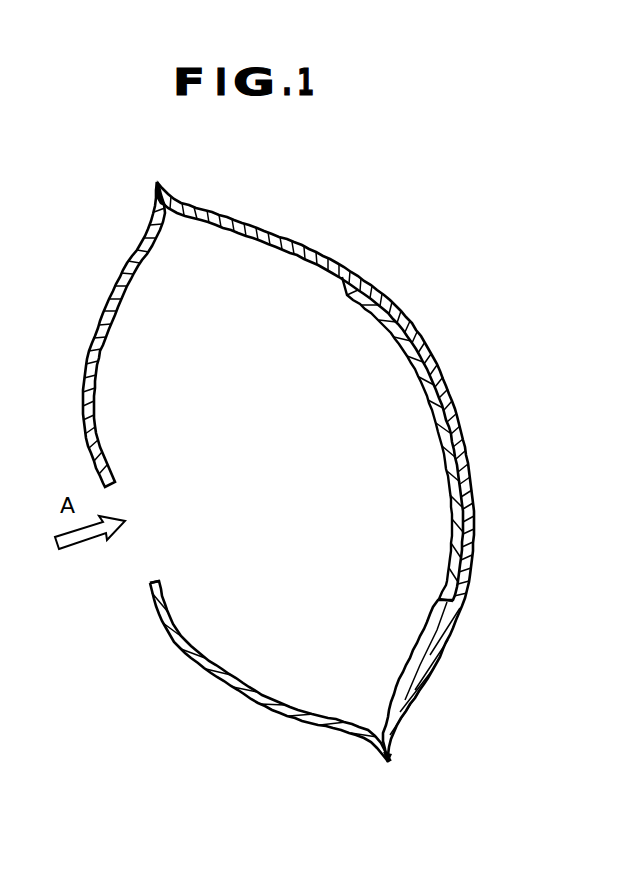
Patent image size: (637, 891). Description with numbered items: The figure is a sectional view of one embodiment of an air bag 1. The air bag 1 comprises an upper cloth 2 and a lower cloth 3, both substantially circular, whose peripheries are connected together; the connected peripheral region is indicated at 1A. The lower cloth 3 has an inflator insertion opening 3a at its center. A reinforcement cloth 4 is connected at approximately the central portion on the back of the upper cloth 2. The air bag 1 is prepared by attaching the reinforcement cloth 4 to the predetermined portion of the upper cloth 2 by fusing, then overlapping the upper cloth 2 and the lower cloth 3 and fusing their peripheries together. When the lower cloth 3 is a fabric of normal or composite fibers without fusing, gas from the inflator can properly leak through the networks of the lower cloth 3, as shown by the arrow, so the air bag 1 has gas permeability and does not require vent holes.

The air bag 1 is at (443, 345).
The joint edge portion 1A is at (175, 188).
The upper cloth 2 is at (470, 567).
The lower cloth 3 is at (190, 653).
The inflator insertion opening 3a is at (140, 563).
The reinforcement cloth 4 is at (438, 442).